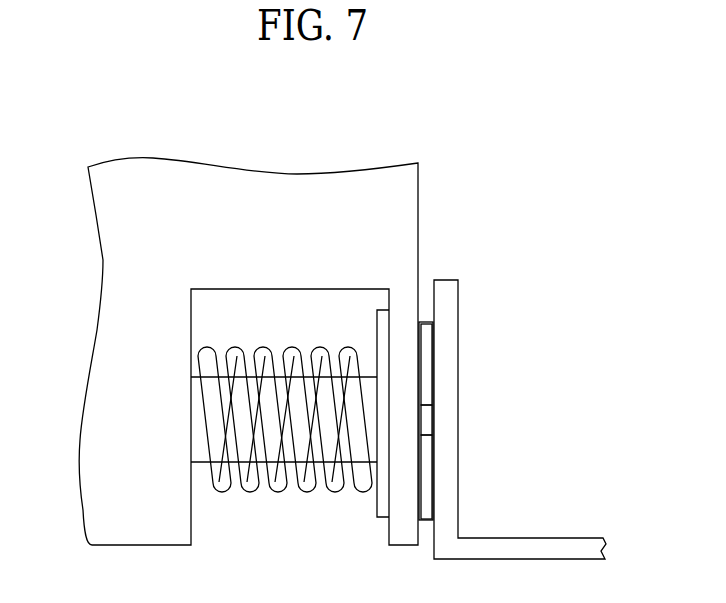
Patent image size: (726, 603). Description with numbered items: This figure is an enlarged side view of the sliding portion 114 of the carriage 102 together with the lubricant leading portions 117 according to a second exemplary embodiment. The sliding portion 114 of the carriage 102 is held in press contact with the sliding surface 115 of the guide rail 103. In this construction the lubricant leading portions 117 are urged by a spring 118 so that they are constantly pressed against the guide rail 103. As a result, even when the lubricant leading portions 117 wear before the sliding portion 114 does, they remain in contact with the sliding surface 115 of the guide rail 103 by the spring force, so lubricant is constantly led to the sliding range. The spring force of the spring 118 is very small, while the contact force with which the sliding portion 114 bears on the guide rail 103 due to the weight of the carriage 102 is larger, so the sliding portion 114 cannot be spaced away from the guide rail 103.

The carriage 102 is at (117, 270).
The guide rail 103 is at (448, 461).
The sliding portion 114 is at (427, 422).
The sliding surface 115 is at (430, 294).
The lubricant leading portions 117 is at (427, 357).
The spring 118 is at (218, 482).